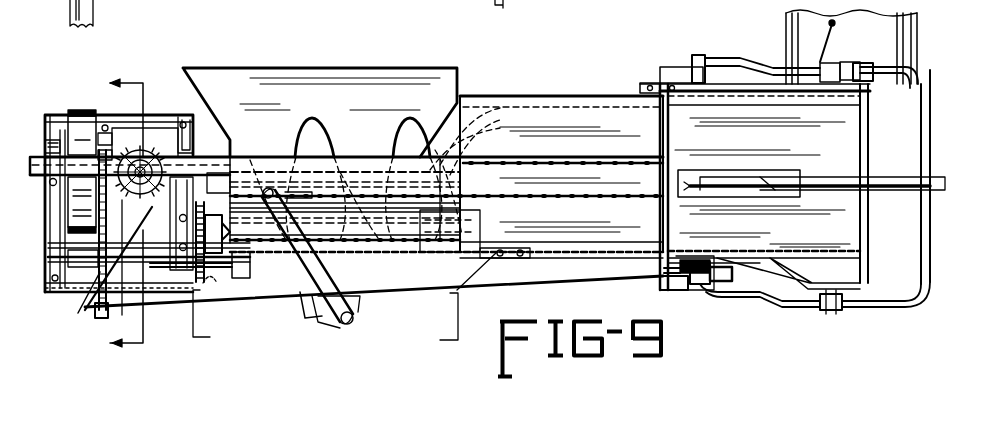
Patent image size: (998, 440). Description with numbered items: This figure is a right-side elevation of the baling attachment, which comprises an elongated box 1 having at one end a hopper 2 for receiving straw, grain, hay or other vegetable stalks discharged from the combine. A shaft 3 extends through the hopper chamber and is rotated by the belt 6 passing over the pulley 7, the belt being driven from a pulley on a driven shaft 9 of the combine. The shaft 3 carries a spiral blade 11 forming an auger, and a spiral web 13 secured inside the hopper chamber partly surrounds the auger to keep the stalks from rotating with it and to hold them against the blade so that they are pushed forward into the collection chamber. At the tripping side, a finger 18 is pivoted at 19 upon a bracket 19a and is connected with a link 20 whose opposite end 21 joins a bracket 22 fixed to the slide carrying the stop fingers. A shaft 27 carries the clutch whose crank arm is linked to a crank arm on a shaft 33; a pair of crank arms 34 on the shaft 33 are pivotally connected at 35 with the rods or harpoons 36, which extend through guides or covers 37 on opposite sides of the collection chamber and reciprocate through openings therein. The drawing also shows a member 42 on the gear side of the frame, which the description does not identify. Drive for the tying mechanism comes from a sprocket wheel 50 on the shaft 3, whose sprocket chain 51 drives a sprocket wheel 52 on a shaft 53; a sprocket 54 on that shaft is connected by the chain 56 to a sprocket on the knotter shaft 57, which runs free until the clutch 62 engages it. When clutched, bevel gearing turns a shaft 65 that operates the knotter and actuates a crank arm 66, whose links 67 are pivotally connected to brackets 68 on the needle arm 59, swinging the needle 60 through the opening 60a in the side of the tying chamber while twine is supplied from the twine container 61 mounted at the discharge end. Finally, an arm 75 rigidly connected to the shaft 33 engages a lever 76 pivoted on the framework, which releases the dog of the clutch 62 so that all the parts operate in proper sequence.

The elongated box 1 is at (583, 130).
The hopper 2 is at (320, 155).
The shaft 3 is at (38, 182).
The belt 6 is at (88, 110).
The pulley 7 is at (72, 130).
The driven shaft 9 is at (708, 256).
The spiral blade 11 is at (310, 132).
The spiral web 13 is at (515, 137).
The finger 18 is at (730, 281).
The pivot 19 is at (716, 282).
The bracket 19a is at (678, 290).
The link 20 is at (608, 280).
The opposite end of link 21 is at (100, 303).
The bracket 22 is at (52, 245).
The shaft 27 is at (152, 145).
The shaft 33 is at (355, 322).
The crank arms 34 is at (318, 258).
The pivotal connection 35 is at (268, 188).
The harpoons 36 is at (396, 240).
The guides or covers 37 is at (632, 178).
The rack 42 is at (143, 182).
The sprocket wheel 50 is at (106, 152).
The sprocket chain 51 is at (118, 258).
The sprocket wheel 52 is at (78, 296).
The shaft 53 is at (175, 225).
The sprocket 54 is at (196, 284).
The chain 56 is at (205, 228).
The knotter shaft 57 is at (122, 300).
The needle arm 59 is at (932, 240).
The needle 60 is at (888, 192).
The opening 60a is at (738, 172).
The twine container 61 is at (880, 52).
The clutch 62 is at (235, 278).
The shaft 65 is at (665, 66).
The crank arm 66 is at (696, 55).
The links 67 is at (737, 58).
The brackets 68 is at (873, 82).
The arm 75 is at (322, 322).
The lever 76 is at (305, 310).